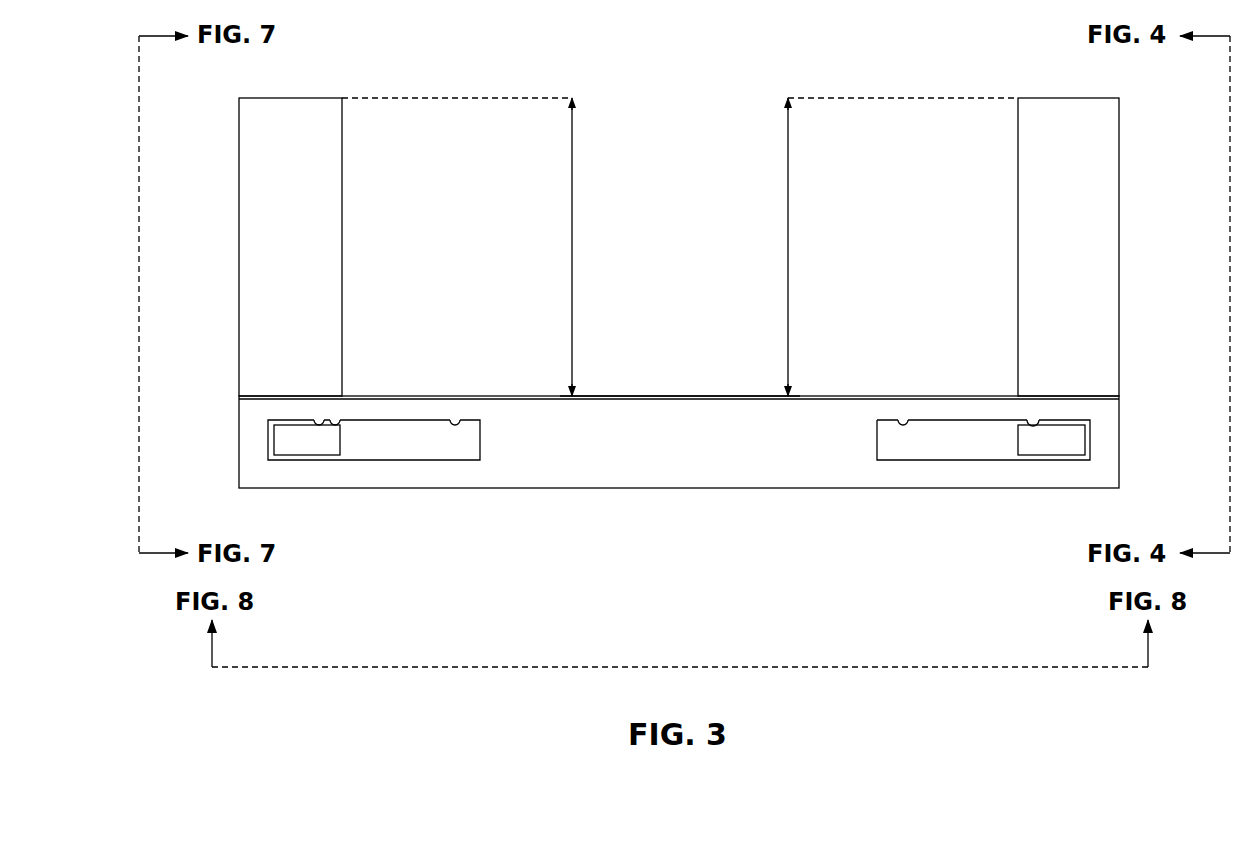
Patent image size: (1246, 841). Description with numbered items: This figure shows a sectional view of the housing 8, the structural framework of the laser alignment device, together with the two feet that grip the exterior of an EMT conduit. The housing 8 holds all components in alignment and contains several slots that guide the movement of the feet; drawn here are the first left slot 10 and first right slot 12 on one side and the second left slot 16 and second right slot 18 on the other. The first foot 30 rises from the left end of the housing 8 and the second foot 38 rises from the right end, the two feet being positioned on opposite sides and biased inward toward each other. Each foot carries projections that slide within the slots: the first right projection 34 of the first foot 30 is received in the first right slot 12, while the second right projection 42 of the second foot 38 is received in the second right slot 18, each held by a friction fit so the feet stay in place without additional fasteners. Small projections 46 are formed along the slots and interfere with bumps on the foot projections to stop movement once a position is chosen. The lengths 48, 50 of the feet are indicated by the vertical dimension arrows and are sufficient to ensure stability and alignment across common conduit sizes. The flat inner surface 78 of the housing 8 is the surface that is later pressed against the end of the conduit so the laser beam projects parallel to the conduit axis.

The housing 8 is at (1134, 445).
The first left slot 10 is at (356, 437).
The first right slot 12 is at (356, 437).
The second left slot 16 is at (1000, 437).
The second right slot 18 is at (1000, 437).
The first foot 30 is at (1000, 215).
The first right projection 34 is at (1052, 446).
The second foot 38 is at (355, 215).
The second right projection 42 is at (302, 446).
The projections 46 is at (336, 420).
The length of first foot 48 is at (575, 240).
The length of second foot 50 is at (791, 240).
The flat inner surface 78 is at (693, 396).